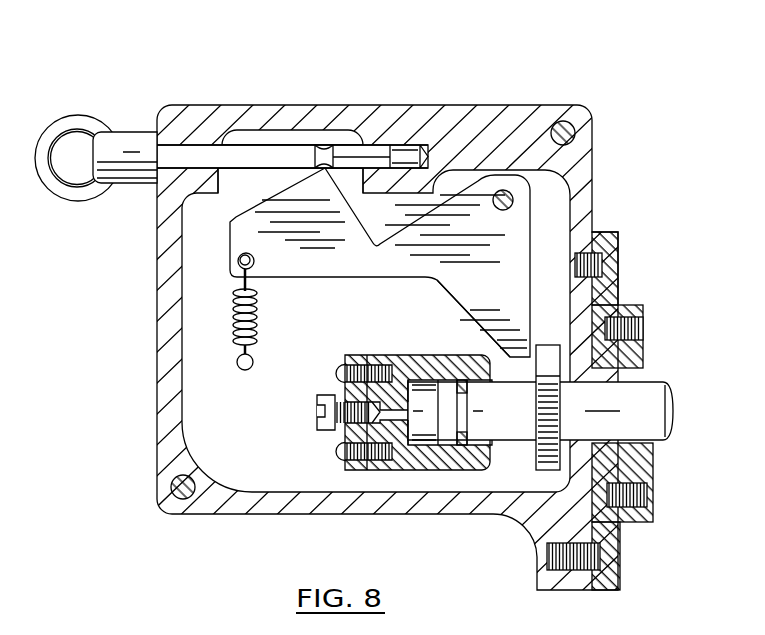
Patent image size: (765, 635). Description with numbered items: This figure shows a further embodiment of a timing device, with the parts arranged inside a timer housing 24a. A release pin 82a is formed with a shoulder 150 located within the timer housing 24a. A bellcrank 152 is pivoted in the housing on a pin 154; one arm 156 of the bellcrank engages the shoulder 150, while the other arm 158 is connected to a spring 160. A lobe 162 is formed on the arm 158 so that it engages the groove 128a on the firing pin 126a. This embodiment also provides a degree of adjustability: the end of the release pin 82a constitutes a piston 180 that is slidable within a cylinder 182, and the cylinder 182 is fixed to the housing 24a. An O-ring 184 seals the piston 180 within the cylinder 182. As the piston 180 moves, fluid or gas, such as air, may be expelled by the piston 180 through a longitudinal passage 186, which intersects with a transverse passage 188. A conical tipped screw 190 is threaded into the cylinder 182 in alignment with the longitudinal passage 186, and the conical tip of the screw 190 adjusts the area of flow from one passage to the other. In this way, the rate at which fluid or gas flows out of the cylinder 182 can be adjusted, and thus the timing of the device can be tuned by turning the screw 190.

The timer housing 24a is at (170, 303).
The groove 128a is at (328, 147).
The firing pin 126a is at (378, 152).
The lobe 162 is at (318, 174).
The bellcrank 152 is at (409, 259).
The pin 154 is at (512, 206).
The arm 156 is at (479, 318).
The arm 158 is at (259, 244).
The spring 160 is at (262, 330).
The cylinder 182 is at (425, 442).
The transverse passage 188 is at (366, 360).
The longitudinal passage 186 is at (396, 410).
The O-ring 184 is at (460, 380).
The piston 180 is at (450, 414).
The conical tipped screw 190 is at (317, 407).
The release pin 82a is at (509, 430).
The shoulder 150 is at (553, 350).